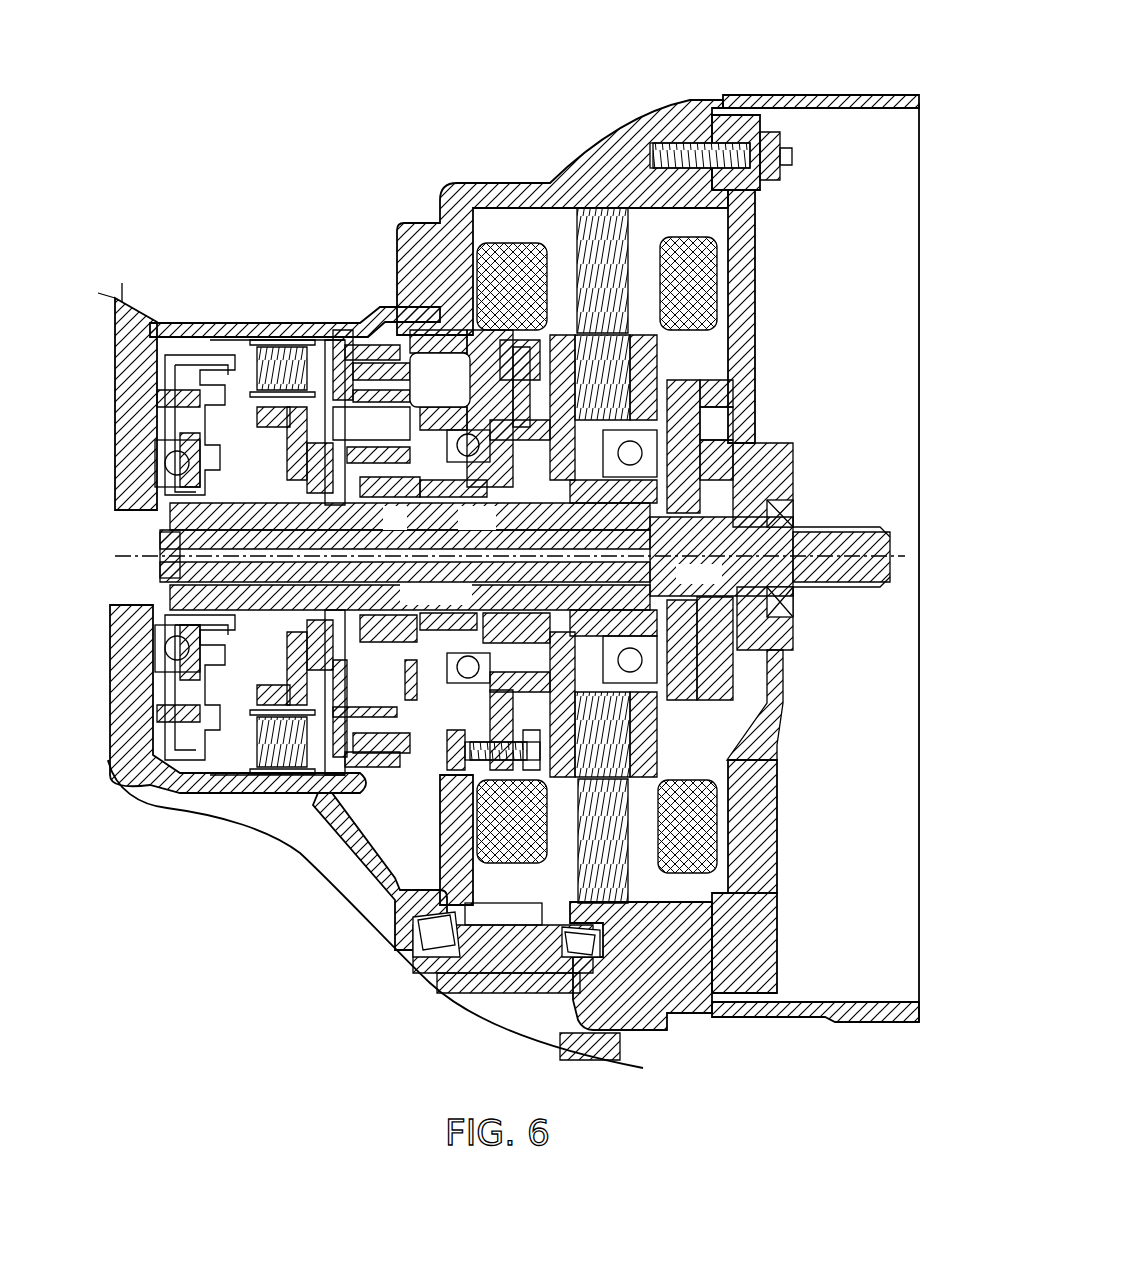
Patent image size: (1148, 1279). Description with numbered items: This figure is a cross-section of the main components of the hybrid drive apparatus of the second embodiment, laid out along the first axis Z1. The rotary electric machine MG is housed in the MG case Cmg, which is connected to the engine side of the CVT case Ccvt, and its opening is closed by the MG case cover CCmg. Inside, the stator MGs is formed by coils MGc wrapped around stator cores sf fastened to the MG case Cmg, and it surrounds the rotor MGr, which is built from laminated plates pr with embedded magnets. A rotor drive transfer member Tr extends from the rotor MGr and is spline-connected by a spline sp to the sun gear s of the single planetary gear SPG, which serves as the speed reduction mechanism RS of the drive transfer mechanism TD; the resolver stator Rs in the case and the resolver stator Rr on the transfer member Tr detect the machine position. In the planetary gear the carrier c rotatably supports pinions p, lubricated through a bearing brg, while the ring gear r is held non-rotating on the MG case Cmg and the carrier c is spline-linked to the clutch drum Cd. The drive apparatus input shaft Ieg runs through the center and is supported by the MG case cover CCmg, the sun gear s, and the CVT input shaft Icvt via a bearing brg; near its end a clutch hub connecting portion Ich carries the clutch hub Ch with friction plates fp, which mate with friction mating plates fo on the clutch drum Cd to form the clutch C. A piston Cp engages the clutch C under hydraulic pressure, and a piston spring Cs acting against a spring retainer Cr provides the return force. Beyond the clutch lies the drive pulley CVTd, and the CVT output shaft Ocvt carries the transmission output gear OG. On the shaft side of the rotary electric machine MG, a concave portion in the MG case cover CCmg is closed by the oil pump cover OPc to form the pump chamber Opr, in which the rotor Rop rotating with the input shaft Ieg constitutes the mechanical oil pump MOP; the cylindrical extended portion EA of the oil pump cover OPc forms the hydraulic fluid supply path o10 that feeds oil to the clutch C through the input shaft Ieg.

The MG case Cmg is at (822, 95).
The rotary electric machine MG is at (520, 178).
The stator core sf is at (600, 212).
The MG case cover CCmg is at (757, 253).
The stator MGs is at (622, 275).
The coil MGc is at (712, 265).
The rotor MGr is at (640, 345).
The laminated plate pr is at (706, 392).
The pump chamber Opr is at (725, 430).
The oil pump cover OPc is at (790, 470).
The rotor Rop is at (725, 497).
The drive apparatus input shaft Ieg is at (868, 530).
The hydraulic fluid supply path o10 is at (650, 558).
The extended portion EA is at (760, 629).
The first axis Z1 is at (896, 560).
The mechanical oil pump MOP is at (743, 688).
The CVT case Ccvt is at (130, 295).
The drive pulley CVTd is at (157, 320).
The clutch C is at (207, 795).
The bearing brg is at (390, 412).
The piston spring Cs is at (236, 345).
The piston Cp is at (172, 388).
The spring retainer Cr is at (265, 672).
The CVT input shaft Icvt is at (165, 624).
The clutch drum Cd is at (317, 340).
The drive transfer mechanism TD is at (389, 213).
The speed reduction mechanism RS is at (378, 345).
The spline sp is at (355, 340).
The carrier c is at (323, 345).
The ring gear r is at (368, 345).
The pinion p is at (410, 556).
The resolver stator Rr is at (557, 505).
The rotor drive transfer member Tr is at (508, 626).
The sun gear s is at (380, 645).
The clutch hub connecting portion Ich is at (345, 760).
The resolver stator Rs is at (455, 750).
The single planetary gear SPG is at (385, 680).
The friction plate fp is at (300, 760).
The friction mating plate fo is at (298, 775).
The clutch hub Ch is at (320, 793).
The transmission output gear OG is at (480, 913).
The CVT output shaft Ocvt is at (470, 990).